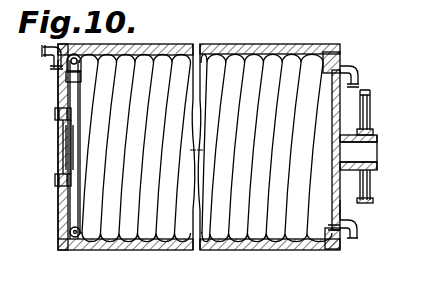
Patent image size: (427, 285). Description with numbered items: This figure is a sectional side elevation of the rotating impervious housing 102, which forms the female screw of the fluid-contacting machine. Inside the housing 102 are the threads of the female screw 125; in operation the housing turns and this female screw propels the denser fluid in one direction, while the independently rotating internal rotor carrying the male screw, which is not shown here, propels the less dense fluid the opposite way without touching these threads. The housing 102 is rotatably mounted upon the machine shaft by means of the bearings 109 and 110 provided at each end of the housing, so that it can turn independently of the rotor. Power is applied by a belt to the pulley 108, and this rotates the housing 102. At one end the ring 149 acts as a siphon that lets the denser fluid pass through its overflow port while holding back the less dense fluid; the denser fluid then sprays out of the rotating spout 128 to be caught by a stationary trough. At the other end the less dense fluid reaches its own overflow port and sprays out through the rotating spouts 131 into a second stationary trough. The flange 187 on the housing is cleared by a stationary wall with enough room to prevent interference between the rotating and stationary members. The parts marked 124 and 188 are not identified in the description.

The rotating impervious housing 102 is at (263, 251).
The pulley 108 is at (370, 102).
The bearing 109 is at (56, 128).
The bearing 110 is at (360, 140).
The top plate 124 is at (252, 3).
The female screw 125 is at (261, 56).
The rotating spout 128 is at (50, 57).
The rotating spouts 131 is at (358, 66).
The ring 149 is at (76, 62).
The flange 187 is at (340, 200).
The side wall 188 is at (58, 205).